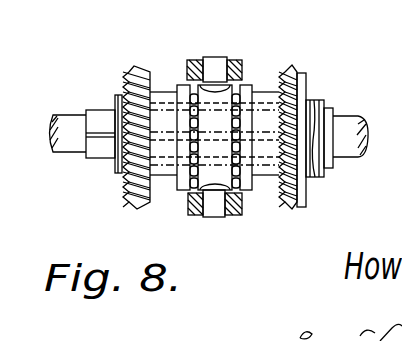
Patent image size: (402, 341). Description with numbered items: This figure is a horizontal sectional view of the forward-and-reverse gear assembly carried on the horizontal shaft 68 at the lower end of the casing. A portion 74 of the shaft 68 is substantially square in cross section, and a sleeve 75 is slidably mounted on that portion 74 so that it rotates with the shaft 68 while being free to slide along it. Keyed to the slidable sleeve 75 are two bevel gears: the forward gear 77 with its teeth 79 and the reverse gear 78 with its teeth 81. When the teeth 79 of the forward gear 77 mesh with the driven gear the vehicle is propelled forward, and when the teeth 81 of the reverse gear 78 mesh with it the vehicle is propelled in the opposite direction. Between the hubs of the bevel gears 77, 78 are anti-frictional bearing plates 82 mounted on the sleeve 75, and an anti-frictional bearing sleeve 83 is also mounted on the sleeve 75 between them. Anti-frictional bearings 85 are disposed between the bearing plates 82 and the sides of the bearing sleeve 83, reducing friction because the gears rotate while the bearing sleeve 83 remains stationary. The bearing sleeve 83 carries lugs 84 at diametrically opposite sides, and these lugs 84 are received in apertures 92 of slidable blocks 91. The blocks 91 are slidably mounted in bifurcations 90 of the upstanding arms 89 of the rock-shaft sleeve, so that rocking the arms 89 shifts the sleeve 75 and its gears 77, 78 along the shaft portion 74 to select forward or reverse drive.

The horizontal shaft 68 is at (340, 158).
The portion of the shaft 74 is at (102, 151).
The sleeve 75 is at (164, 96).
The forward gear 77 is at (124, 84).
The reverse gear 78 is at (308, 195).
The teeth of the forward gear 79 is at (140, 66).
The teeth of the reverse gear 81 is at (297, 209).
The anti-frictional bearing plates 82 is at (181, 182).
The anti-frictional bearing sleeve 83 is at (215, 137).
The lugs 84 is at (216, 58).
The anti-frictional bearings 85 is at (194, 142).
The upstanding arms 89 is at (300, 65).
The bifurcations 90 is at (187, 63).
The slidable blocks 91 is at (195, 57).
The apertures 92 is at (240, 62).